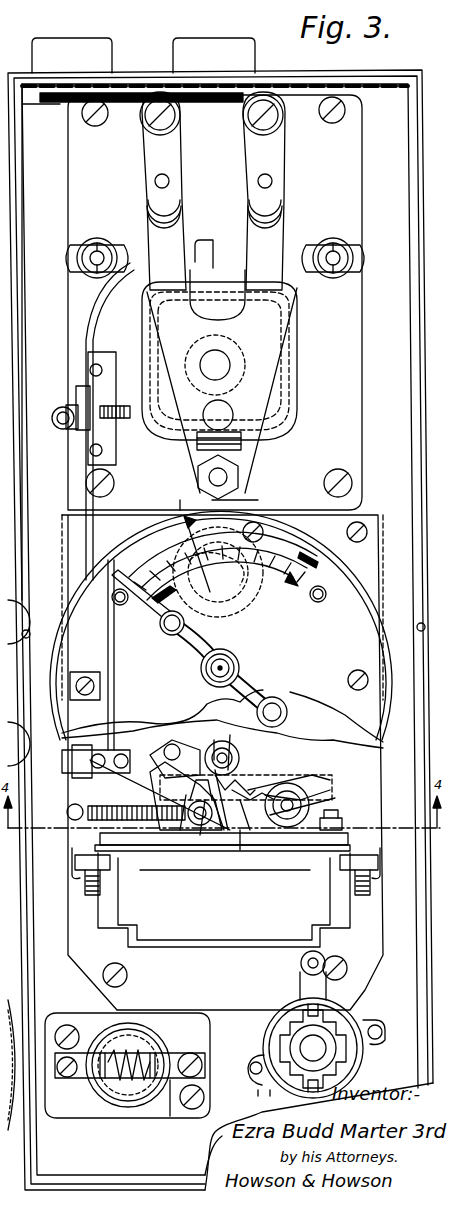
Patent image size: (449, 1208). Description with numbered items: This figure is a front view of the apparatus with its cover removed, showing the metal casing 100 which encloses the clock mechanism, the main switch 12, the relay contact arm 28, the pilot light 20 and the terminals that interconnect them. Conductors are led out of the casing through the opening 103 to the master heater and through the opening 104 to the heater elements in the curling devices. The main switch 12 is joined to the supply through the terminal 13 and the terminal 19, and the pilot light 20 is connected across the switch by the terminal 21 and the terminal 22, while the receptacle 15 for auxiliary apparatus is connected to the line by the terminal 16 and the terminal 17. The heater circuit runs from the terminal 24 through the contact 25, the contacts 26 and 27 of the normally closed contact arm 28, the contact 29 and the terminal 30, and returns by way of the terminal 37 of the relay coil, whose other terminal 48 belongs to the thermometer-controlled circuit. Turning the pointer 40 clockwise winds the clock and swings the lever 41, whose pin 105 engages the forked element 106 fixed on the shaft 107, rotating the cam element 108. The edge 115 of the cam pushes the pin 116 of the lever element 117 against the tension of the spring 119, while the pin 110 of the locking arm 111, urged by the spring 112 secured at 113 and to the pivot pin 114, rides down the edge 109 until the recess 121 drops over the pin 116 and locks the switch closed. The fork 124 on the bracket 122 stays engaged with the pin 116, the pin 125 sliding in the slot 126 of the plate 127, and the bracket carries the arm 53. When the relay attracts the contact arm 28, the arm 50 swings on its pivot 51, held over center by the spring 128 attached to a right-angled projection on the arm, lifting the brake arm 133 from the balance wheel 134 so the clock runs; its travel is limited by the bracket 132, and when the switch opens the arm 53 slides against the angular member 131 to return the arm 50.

The main switch 12 is at (222, 890).
The terminal 13 is at (370, 887).
The receptacle 15 is at (352, 1065).
The terminal 16 is at (252, 1052).
The terminal 17 is at (383, 1022).
The terminal 19 is at (82, 872).
The pilot light 20 is at (100, 1103).
The terminal 21 is at (72, 1078).
The terminal 22 is at (188, 1055).
The terminal 24 is at (150, 124).
The contact 25 is at (171, 185).
The contact 26 is at (146, 208).
The contact 27 is at (282, 219).
The contact arm 28 is at (262, 349).
The contact 29 is at (276, 184).
The terminal 30 is at (270, 121).
The terminal 37 is at (355, 266).
The pointer 40 is at (185, 637).
The lever 41 is at (246, 697).
The terminal 48 is at (76, 268).
The arm 50 is at (92, 330).
The pivot 51 is at (72, 430).
The arm 53 is at (118, 742).
The casing 100 is at (22, 197).
The opening 103 is at (100, 63).
The opening 104 is at (245, 60).
The pin 105 is at (255, 702).
The forked element 106 is at (248, 740).
The shaft 107 is at (247, 785).
The cam element 108 is at (157, 774).
The edge 109 is at (160, 742).
The pin 110 is at (175, 745).
The locking arm 111 is at (263, 787).
The spring 112 is at (295, 813).
The attachment point 113 is at (290, 779).
The pivot pin 114 is at (278, 830).
The edge 115 is at (220, 830).
The pin 116 is at (197, 827).
The lever element 117 is at (238, 847).
The spring 119 is at (98, 806).
The recess 121 is at (247, 810).
The bracket 122 is at (142, 772).
The fork 124 is at (208, 830).
The pin 125 is at (268, 790).
The slot 126 is at (300, 798).
The plate 127 is at (333, 798).
The spring 128 is at (68, 404).
The angular member 131 is at (100, 742).
The bracket 132 is at (97, 678).
The brake arm 133 is at (152, 560).
The balance wheel 134 is at (262, 495).